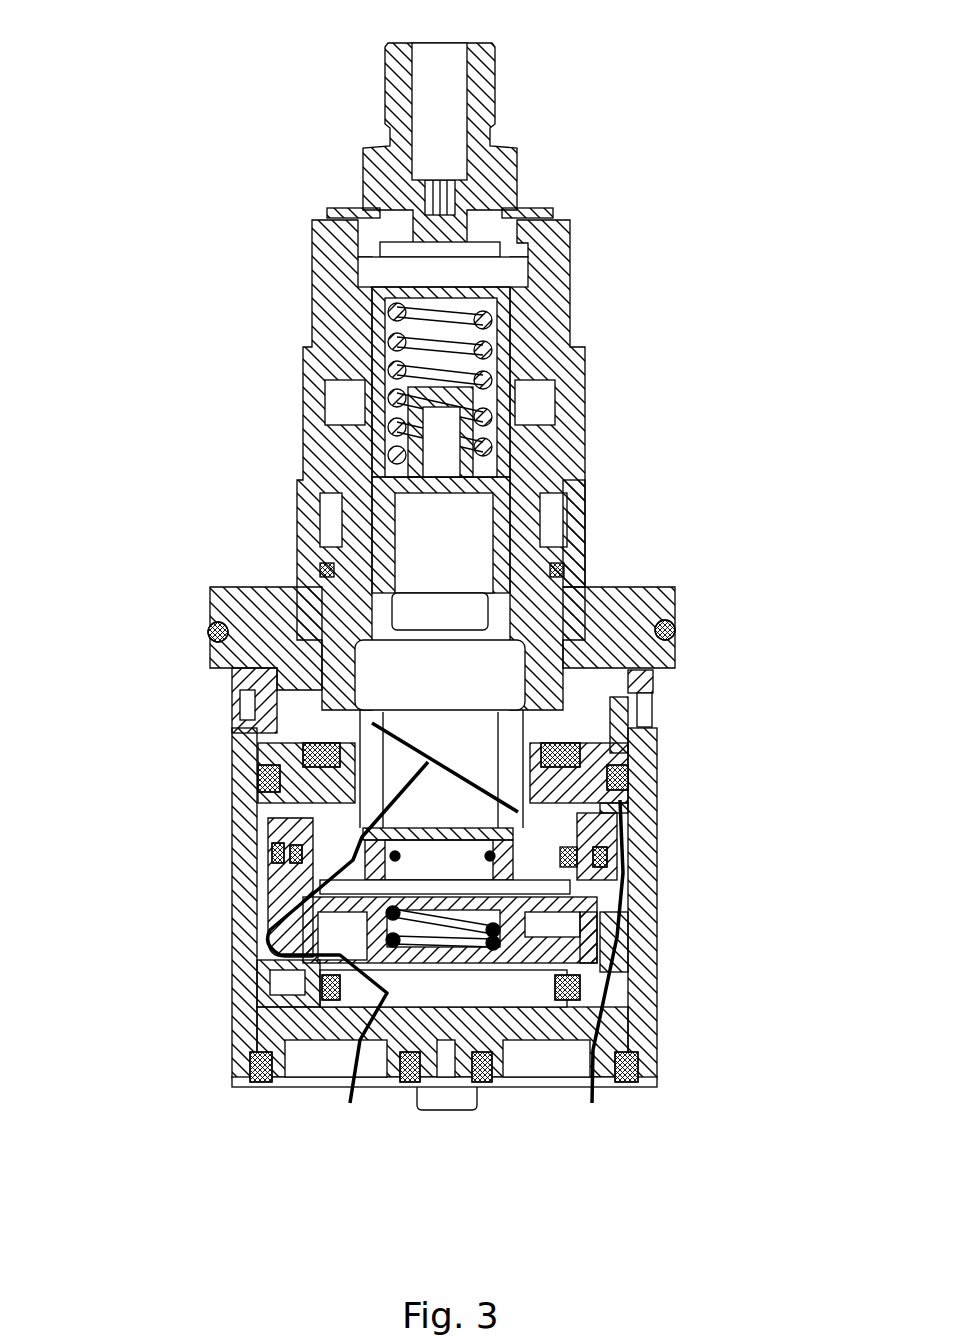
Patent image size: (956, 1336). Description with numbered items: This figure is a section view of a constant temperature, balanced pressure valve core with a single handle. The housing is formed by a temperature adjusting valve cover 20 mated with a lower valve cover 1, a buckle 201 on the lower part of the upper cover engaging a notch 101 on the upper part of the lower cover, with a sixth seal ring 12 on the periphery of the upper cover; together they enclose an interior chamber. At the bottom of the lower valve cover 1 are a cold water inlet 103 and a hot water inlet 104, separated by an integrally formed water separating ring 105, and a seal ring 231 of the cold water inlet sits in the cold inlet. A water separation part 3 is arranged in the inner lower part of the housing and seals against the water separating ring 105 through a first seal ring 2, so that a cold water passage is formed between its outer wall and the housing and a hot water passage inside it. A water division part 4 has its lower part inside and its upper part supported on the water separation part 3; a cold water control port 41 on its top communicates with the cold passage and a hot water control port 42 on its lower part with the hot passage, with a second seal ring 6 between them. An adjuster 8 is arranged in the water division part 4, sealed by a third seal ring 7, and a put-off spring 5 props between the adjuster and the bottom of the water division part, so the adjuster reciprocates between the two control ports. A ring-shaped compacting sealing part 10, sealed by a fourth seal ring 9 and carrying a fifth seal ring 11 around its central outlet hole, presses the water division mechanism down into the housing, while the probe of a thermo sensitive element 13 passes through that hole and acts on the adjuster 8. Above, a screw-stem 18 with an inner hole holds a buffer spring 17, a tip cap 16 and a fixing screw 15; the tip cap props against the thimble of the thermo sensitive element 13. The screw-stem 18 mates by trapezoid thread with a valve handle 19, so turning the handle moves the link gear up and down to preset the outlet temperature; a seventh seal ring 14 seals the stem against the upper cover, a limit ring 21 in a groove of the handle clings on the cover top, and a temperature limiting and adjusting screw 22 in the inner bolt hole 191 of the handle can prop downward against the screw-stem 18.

The lower valve cover 1 is at (655, 1025).
The first seal ring 2 is at (573, 983).
The water separation part 3 is at (623, 942).
The water division part 4 is at (590, 910).
The put-off spring 5 is at (320, 908).
The second seal ring 6 is at (270, 848).
The third seal ring 7 is at (267, 862).
The adjuster 8 is at (583, 836).
The fourth seal ring 9 is at (655, 748).
The compacting sealing part 10 is at (633, 763).
The fifth seal ring 11 is at (573, 735).
The sixth seal ring 12 is at (680, 617).
The thermo sensitive element 13 is at (512, 640).
The seventh seal ring 14 is at (573, 557).
The fixing screw 15 is at (517, 490).
The tip cap 16 is at (490, 430).
The buffer spring 17 is at (495, 383).
The screw-stem 18 is at (545, 318).
The valve handle 19 is at (540, 268).
The temperature adjusting valve cover 20 is at (575, 228).
The limit ring 21 is at (550, 210).
The temperature limiting and adjusting screw 22 is at (465, 215).
The cold water control port 41 is at (638, 802).
The hot water control port 42 is at (622, 935).
The notch 101 is at (240, 707).
The cold water inlet 103 is at (556, 1062).
The hot water inlet 104 is at (321, 1062).
The water separating ring 105 is at (310, 990).
The inner bolt hole 191 is at (455, 150).
The buckle 201 is at (213, 665).
The seal ring of the cold water inlet 231 is at (240, 1082).